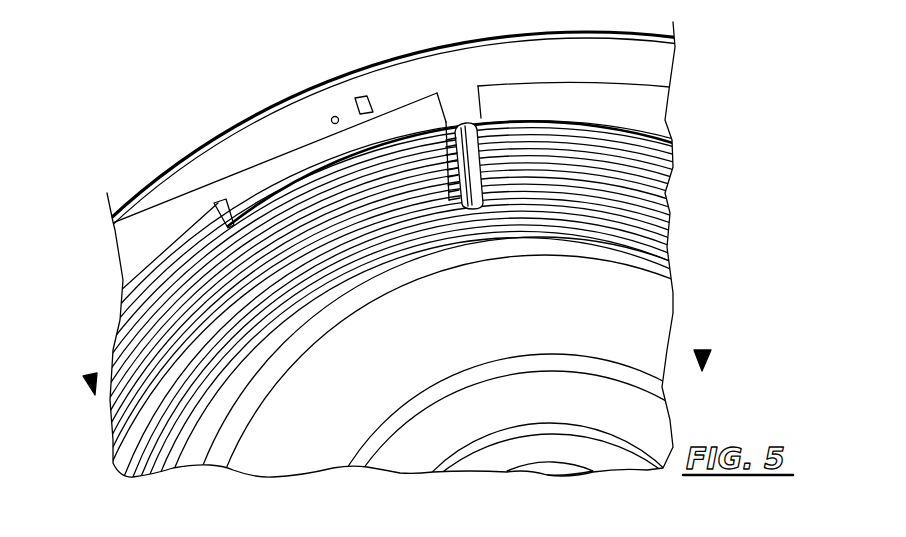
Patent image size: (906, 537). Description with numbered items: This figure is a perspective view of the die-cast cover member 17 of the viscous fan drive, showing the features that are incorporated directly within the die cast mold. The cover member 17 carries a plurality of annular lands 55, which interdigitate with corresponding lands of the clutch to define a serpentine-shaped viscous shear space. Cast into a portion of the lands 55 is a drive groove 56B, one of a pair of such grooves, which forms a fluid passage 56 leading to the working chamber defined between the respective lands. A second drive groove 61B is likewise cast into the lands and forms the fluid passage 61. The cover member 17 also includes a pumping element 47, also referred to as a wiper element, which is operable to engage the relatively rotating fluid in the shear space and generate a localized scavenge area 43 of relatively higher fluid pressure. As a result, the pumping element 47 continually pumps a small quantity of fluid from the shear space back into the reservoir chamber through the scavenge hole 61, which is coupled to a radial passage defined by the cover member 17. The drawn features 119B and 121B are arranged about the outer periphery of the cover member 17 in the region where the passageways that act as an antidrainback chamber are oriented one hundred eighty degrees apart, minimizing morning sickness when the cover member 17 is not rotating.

The cover member 17 is at (403, 57).
The pumping element 47 is at (268, 162).
The scavenge area 43 is at (348, 113).
The scavenge hole 61 is at (333, 117).
The annular lands 55 is at (663, 130).
The fluid passage 56 is at (488, 200).
The drive groove 56B is at (478, 160).
The inner ring 119B is at (252, 330).
The rotation direction arrow 121B is at (90, 377).
The drive groove 61B is at (703, 350).